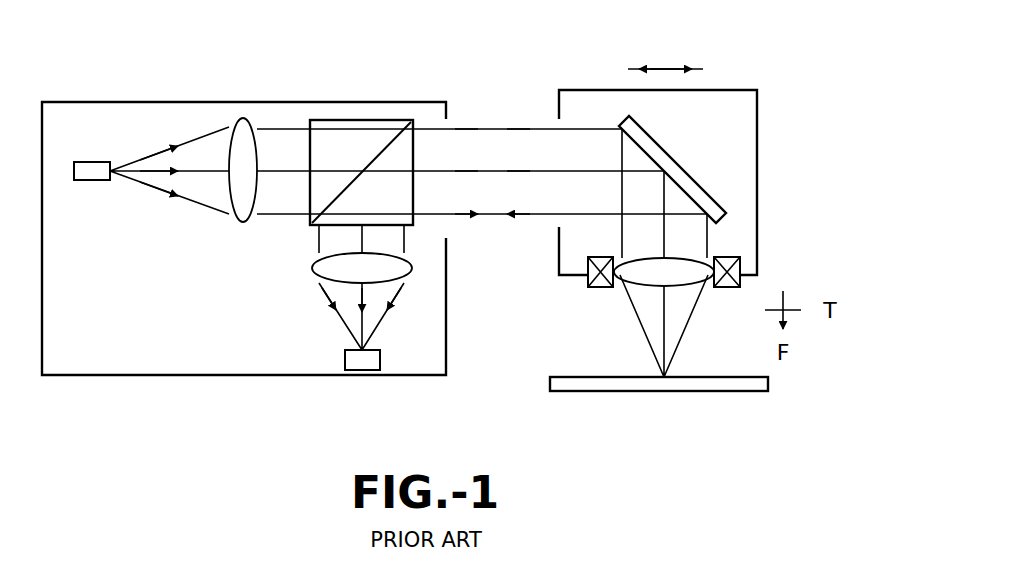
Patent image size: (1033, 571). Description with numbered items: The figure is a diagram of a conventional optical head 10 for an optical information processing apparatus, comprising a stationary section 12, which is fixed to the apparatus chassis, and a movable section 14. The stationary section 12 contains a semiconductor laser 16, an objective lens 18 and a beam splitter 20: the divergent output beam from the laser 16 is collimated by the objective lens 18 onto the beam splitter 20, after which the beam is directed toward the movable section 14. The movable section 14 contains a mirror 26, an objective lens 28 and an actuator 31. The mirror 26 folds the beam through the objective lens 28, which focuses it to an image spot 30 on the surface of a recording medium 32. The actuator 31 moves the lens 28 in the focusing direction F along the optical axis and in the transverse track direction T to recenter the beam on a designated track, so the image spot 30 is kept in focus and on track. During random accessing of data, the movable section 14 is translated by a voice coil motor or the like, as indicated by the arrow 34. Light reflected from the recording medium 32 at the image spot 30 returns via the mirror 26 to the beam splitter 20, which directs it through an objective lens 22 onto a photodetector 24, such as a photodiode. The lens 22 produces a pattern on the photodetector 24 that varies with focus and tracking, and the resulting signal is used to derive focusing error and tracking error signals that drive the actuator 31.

The optical head 10 is at (483, 104).
The stationary section 12 is at (63, 376).
The movable section 14 is at (749, 89).
The semiconductor laser 16 is at (80, 162).
The objective lens 18 is at (243, 118).
The beam splitter 20 is at (350, 120).
The objective lens 22 is at (312, 268).
The photodetector 24 is at (345, 365).
The mirror 26 is at (620, 125).
The objective lens 28 is at (618, 285).
The image spot 30 is at (656, 392).
The actuator 31 is at (597, 290).
The recording medium 32 is at (740, 392).
The arrow 34 is at (668, 66).